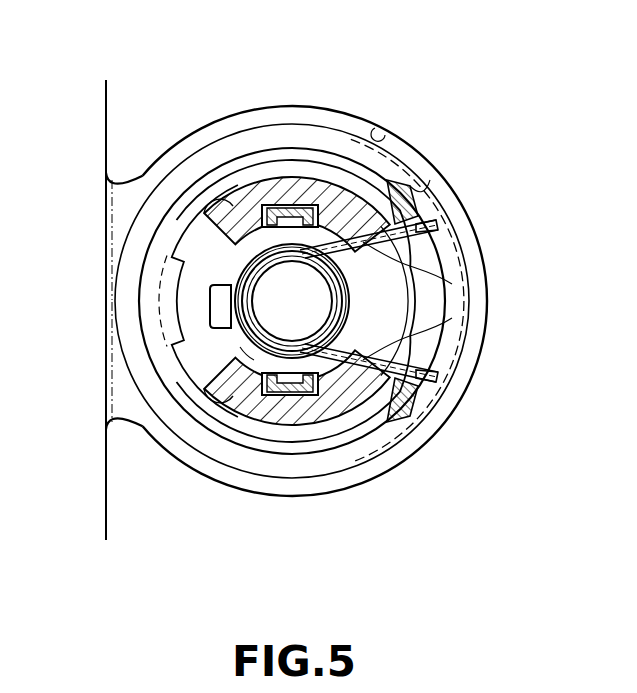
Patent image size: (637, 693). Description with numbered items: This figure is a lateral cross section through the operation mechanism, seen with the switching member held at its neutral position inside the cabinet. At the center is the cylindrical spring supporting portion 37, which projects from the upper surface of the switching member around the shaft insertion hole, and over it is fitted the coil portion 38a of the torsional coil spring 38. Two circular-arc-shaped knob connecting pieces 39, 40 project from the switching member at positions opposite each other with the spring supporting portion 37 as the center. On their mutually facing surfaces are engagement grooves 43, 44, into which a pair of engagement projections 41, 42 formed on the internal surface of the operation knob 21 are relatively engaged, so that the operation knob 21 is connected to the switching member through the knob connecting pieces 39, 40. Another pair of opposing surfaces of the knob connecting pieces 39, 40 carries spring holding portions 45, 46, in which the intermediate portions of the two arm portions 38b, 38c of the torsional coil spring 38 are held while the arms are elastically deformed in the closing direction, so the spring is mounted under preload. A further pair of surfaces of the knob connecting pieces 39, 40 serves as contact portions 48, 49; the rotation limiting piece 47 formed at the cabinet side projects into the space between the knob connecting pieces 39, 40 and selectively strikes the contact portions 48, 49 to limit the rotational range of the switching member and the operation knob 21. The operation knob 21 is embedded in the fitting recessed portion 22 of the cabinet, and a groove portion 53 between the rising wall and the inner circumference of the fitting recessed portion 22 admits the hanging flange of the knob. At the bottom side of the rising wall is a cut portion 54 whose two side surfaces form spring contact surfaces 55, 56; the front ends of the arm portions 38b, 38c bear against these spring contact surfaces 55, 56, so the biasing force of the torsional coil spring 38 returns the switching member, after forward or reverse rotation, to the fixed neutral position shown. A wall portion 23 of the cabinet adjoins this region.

The operation knob 21 is at (134, 219).
The fitting recessed portion 22 is at (385, 134).
The flange wall 23 is at (122, 410).
The spring supporting portion 37 is at (244, 346).
The torsional coil spring 38 is at (346, 300).
The coil portion 38a is at (236, 277).
The arm portion 38b is at (440, 226).
The arm portion 38c is at (442, 380).
The knob connecting piece 39 is at (268, 212).
The knob connecting piece 40 is at (240, 390).
The engagement projection 41 is at (295, 206).
The engagement projection 42 is at (307, 396).
The engagement groove 43 is at (316, 210).
The engagement groove 44 is at (306, 396).
The spring holding portion 45 is at (452, 271).
The spring holding portion 46 is at (455, 339).
The rotation limiting piece 47 is at (165, 298).
The contact portion 48 is at (204, 210).
The contact portion 49 is at (206, 404).
The groove portion 53 is at (430, 310).
The cut portion 54 is at (453, 296).
The spring contact surface 55 is at (425, 212).
The spring contact surface 56 is at (438, 392).